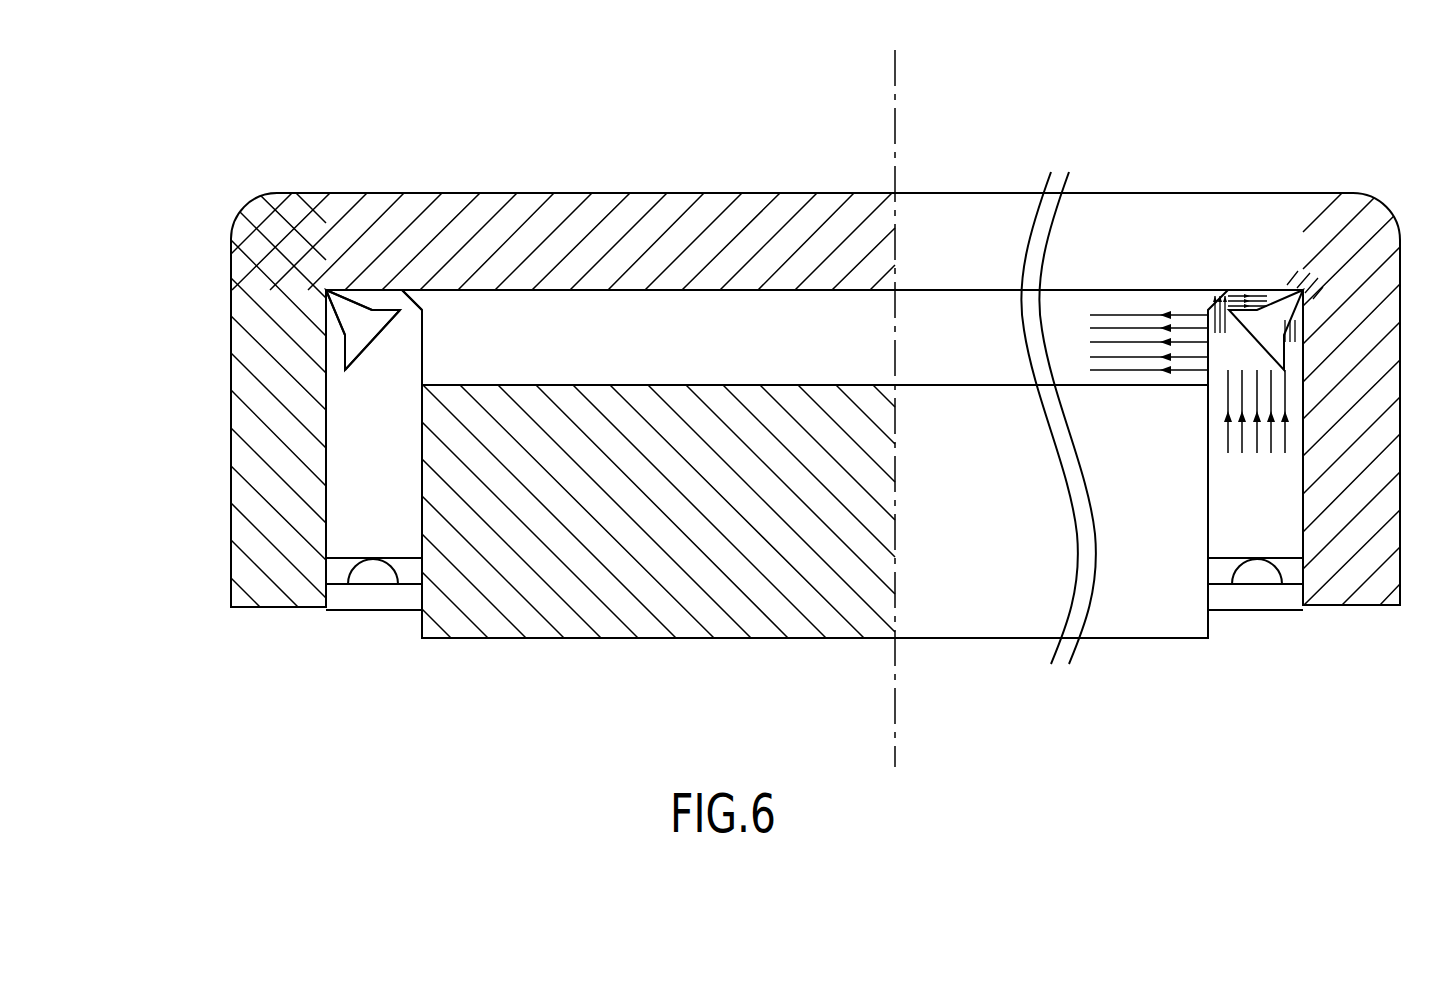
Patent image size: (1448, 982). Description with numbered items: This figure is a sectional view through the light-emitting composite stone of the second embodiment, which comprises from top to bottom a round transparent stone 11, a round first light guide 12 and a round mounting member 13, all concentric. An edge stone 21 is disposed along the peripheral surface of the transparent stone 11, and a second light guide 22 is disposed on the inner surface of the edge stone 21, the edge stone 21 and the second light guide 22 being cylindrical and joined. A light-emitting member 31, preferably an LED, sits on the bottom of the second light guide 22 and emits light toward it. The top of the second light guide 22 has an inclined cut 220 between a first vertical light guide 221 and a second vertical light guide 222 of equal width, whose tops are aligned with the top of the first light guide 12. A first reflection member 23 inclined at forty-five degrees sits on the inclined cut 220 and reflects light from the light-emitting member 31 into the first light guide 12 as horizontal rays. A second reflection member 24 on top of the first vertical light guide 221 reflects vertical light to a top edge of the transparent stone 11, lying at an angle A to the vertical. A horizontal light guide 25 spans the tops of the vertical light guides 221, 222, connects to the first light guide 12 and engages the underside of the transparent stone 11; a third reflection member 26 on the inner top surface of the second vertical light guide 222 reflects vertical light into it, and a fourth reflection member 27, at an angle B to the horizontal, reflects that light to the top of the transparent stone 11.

The transparent stone 11 is at (732, 252).
The first light guide 12 is at (913, 345).
The mounting member 13 is at (915, 540).
The edge stone 21 is at (285, 425).
The second light guide 22 is at (360, 510).
The first reflection member 23 is at (342, 302).
The second reflection member 24 is at (352, 312).
The horizontal light guide 25 is at (377, 297).
The third reflection member 26 is at (415, 295).
The fourth reflection member 27 is at (358, 300).
The light-emitting member 31 is at (375, 598).
The inclined cut 220 is at (357, 335).
The first vertical light guide 221 is at (333, 352).
The second vertical light guide 222 is at (412, 338).
The angle A is at (1283, 321).
The angle B is at (1269, 292).